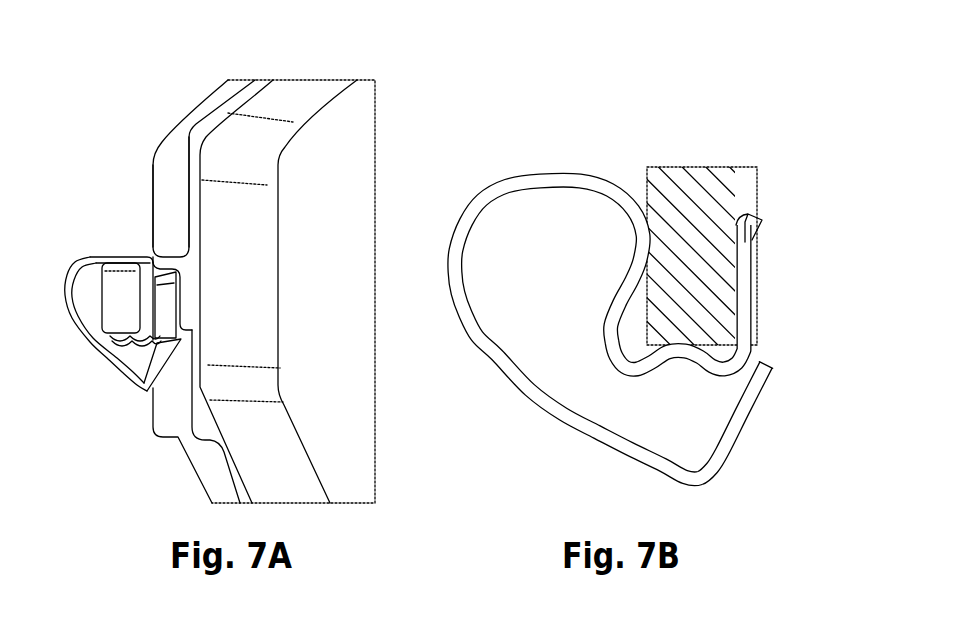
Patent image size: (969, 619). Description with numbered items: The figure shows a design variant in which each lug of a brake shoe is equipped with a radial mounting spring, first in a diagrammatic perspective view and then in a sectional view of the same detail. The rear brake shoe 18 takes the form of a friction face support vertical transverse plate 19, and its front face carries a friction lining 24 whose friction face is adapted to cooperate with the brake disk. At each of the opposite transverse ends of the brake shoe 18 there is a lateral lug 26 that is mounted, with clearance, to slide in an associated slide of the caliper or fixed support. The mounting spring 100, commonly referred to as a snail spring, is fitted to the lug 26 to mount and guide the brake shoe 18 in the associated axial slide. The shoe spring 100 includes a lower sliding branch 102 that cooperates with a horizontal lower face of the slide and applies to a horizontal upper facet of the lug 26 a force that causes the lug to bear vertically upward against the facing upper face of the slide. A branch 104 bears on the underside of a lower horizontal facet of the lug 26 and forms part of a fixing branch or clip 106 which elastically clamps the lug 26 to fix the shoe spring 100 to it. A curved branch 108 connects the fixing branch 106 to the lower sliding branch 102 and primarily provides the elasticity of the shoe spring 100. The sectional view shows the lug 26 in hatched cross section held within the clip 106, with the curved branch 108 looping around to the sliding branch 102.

In FIG. 7A, the rear brake shoe 18 is at (262, 265).
In FIG. 7A, the friction face support vertical transverse plate 19 is at (175, 157).
In FIG. 7A, the friction lining 24 is at (326, 203).
In FIG. 7A, the lateral lug 26 is at (120, 298).
In FIG. 7B, the lateral lug 26 is at (668, 206).
In FIG. 7A, the mounting spring 100 is at (143, 342).
In FIG. 7B, the mounting spring 100 is at (617, 306).
In FIG. 7A, the lower sliding branch 102 is at (147, 393).
In FIG. 7B, the lower sliding branch 102 is at (698, 478).
In FIG. 7A, the branch bearing on the lug 104 is at (118, 342).
In FIG. 7B, the branch bearing on the lug 104 is at (685, 353).
In FIG. 7A, the fixing branch or clip 106 is at (167, 309).
In FIG. 7B, the fixing branch or clip 106 is at (643, 251).
In FIG. 7A, the curved branch 108 is at (80, 290).
In FIG. 7B, the curved branch 108 is at (497, 362).